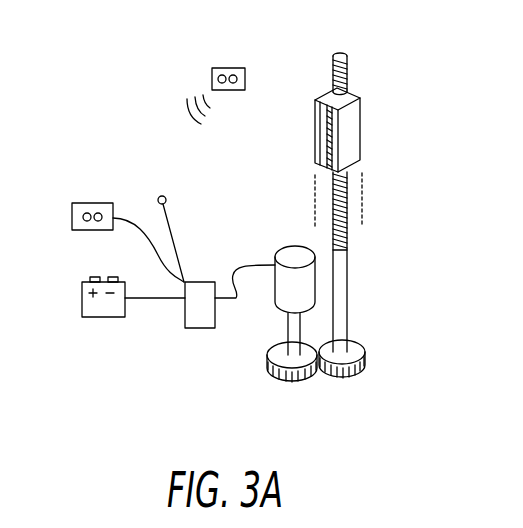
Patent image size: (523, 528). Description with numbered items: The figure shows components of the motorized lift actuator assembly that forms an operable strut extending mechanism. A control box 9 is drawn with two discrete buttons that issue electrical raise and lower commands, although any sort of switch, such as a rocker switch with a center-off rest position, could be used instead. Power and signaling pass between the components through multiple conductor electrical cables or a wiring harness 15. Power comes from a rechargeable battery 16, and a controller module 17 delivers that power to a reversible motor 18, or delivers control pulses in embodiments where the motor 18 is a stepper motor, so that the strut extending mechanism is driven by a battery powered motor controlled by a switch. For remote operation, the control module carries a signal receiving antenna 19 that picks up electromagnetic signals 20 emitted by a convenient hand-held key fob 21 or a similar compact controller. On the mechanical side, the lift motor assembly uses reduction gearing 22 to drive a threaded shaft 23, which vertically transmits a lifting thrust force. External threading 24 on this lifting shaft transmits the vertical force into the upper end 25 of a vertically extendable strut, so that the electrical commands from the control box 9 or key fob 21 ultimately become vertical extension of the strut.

The control box 9 is at (83, 202).
The wiring harness 15 is at (242, 262).
The rechargeable battery 16 is at (105, 320).
The controller module 17 is at (203, 330).
The reversible motor 18 is at (293, 244).
The signal receiving antenna 19 is at (156, 196).
The electromagnetic signals 20 is at (183, 103).
The hand-held key fob 21 is at (223, 65).
The reduction gearing 22 is at (340, 387).
The threaded shaft 23 is at (350, 293).
The external threading 24 is at (352, 68).
The upper end 25 is at (323, 93).